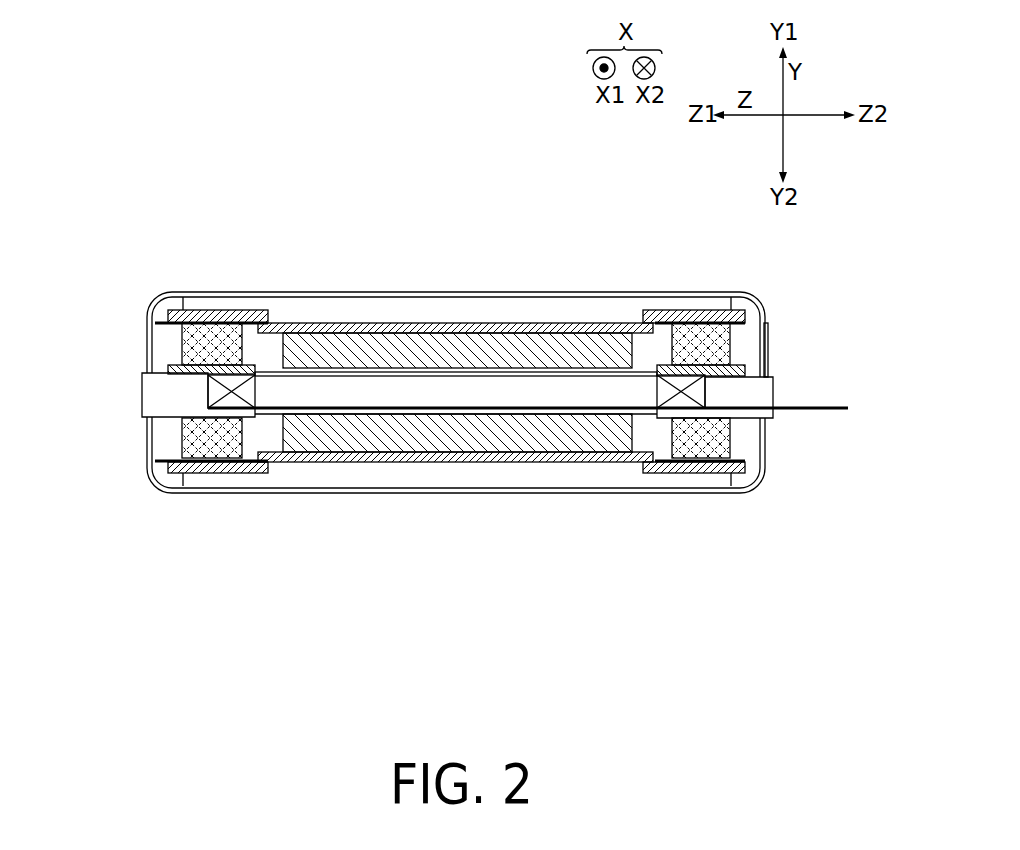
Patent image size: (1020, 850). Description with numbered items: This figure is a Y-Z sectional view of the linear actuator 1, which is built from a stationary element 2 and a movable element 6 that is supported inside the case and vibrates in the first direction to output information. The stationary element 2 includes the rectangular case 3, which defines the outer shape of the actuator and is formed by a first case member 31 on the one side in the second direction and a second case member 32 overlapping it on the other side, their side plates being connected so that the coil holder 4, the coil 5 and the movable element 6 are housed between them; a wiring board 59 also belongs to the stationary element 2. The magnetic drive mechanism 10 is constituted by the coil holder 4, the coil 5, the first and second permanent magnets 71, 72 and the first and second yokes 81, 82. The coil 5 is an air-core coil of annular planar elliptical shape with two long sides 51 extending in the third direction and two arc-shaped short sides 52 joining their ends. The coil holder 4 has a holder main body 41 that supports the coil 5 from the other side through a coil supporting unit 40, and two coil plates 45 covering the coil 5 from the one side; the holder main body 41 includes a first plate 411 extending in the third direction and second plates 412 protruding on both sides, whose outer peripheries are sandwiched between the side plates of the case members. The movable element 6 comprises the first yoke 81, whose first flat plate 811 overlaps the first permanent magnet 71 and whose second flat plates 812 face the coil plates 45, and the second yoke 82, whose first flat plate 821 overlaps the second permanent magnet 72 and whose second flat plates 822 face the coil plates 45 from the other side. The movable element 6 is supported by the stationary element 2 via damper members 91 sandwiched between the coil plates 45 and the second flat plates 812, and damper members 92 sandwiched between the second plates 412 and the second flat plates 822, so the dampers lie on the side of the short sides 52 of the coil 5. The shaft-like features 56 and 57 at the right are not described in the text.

The linear actuator 1 is at (262, 203).
The stationary element 2 is at (290, 596).
The case 3 is at (115, 562).
The first case member 31 is at (146, 343).
The second case member 32 is at (150, 437).
The coil holder 4 is at (205, 562).
The holder main body 41 is at (184, 395).
The second plate 412 is at (143, 395).
The coil plate 45 is at (172, 366).
The coil 5 is at (218, 400).
The short side 52 is at (240, 398).
The damper member 92 is at (243, 447).
The second flat plate 822 is at (230, 466).
The movable element 6 is at (622, 228).
The magnetic drive mechanism 10 is at (469, 469).
The first yoke 81 is at (378, 328).
The first flat plate 811 is at (338, 326).
The second flat plate 812 is at (197, 313).
The first permanent magnet 71 is at (432, 350).
The second permanent magnet 72 is at (488, 433).
The second yoke 82 is at (556, 455).
The first flat plate 821 is at (495, 458).
The damper member 91 is at (222, 340).
The wiring board 59 is at (768, 350).
The coil supporting unit 40 is at (460, 413).
The long side 51 is at (440, 395).
The first plate 411 is at (402, 412).
The shaft 56 is at (822, 411).
The shaft tip 57 is at (838, 407).